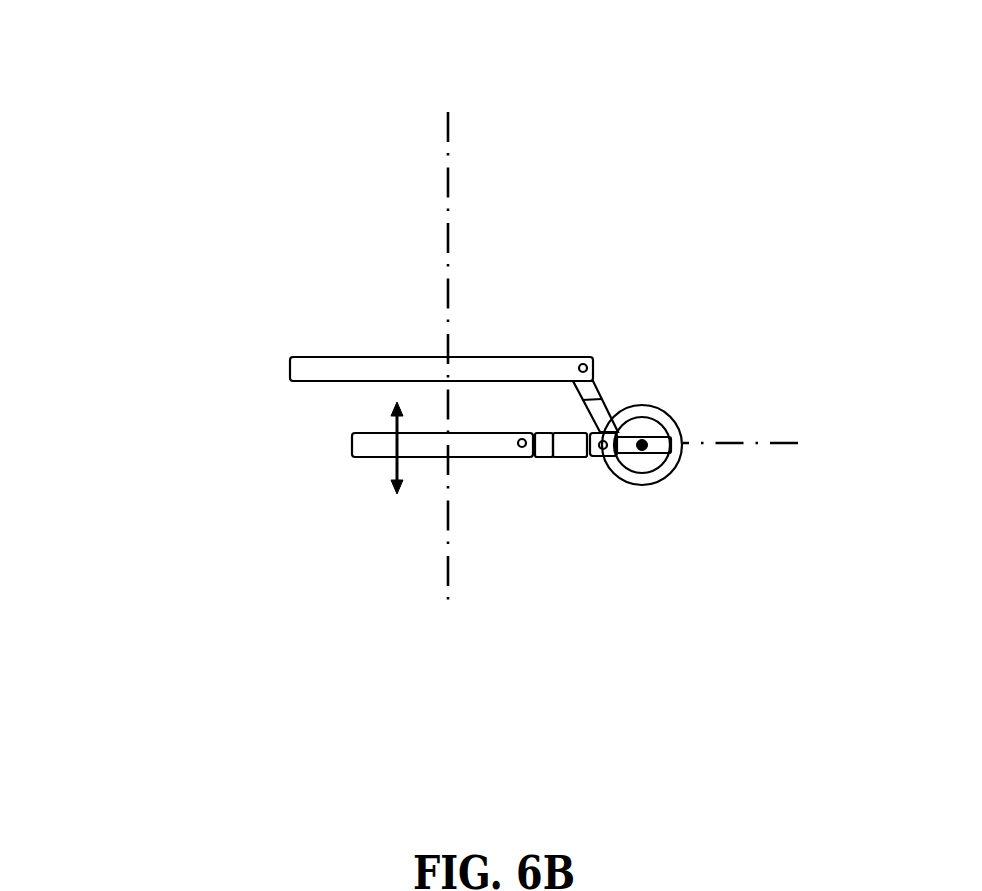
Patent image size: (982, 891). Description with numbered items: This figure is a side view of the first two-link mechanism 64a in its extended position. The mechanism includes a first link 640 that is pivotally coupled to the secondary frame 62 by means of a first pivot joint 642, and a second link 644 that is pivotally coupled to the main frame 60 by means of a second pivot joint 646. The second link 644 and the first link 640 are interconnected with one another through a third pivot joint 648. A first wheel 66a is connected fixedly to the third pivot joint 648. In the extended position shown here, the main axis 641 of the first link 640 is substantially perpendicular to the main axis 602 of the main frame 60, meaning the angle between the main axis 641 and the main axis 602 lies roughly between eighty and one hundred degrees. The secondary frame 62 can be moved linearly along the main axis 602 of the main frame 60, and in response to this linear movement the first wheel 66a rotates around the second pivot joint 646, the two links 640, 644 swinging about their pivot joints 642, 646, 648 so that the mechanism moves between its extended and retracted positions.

The first two-link mechanism 64a is at (67, 39).
The main axis of main frame 602 is at (448, 122).
The main frame 60 is at (290, 364).
The secondary frame 62 is at (352, 443).
The first link 640 is at (552, 458).
The main axis of first link 641 is at (795, 437).
The first pivot joint 642 is at (521, 447).
The second link 644 is at (600, 405).
The second pivot joint 646 is at (583, 366).
The third pivot joint 648 is at (604, 440).
The first wheel 66a is at (678, 453).